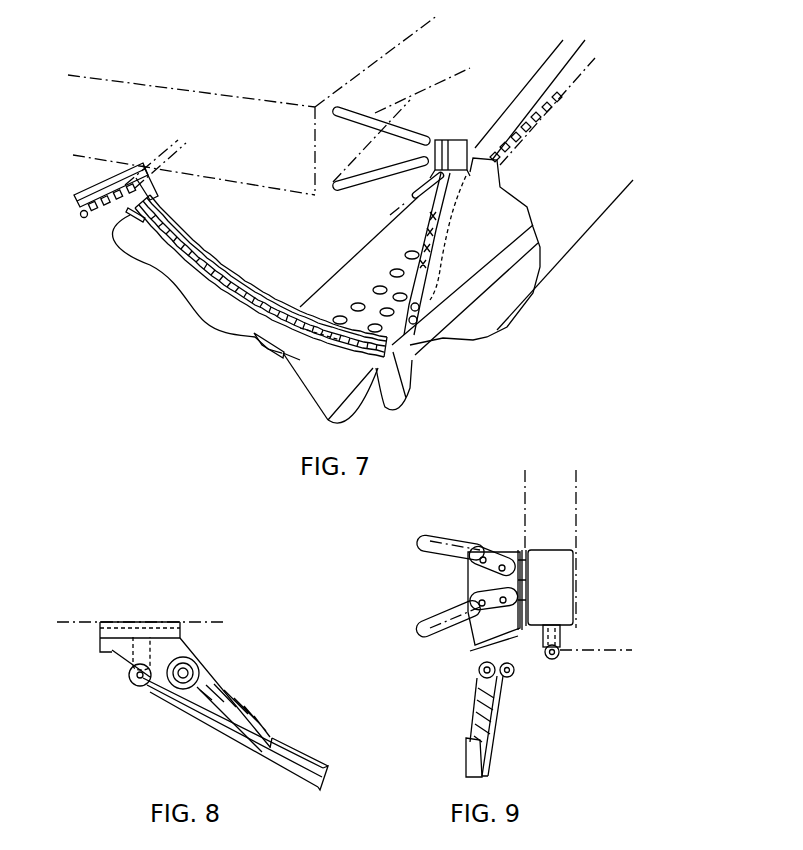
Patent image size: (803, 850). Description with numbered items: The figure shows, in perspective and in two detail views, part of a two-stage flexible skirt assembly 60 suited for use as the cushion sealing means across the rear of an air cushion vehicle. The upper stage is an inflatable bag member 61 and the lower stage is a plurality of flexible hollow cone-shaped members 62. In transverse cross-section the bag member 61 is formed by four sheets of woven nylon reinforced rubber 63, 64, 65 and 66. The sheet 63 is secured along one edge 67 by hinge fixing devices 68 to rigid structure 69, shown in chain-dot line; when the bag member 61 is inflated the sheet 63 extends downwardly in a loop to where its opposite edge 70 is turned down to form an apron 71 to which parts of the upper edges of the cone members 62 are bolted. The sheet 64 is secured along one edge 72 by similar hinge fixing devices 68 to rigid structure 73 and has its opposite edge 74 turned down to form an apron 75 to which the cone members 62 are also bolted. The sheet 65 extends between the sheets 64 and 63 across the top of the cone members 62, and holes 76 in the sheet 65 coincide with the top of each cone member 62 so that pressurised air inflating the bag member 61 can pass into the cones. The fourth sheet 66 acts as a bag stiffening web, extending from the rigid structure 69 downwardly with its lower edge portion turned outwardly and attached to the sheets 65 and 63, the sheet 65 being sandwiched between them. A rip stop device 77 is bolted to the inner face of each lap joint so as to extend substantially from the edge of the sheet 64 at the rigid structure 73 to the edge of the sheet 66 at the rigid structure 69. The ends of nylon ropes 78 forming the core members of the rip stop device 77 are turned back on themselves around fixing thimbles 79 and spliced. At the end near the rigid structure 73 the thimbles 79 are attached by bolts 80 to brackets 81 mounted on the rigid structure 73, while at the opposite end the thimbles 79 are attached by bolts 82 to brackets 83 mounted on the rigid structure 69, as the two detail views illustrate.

In FIG. 7, the two-stage flexible skirt assembly 60 is at (198, 327).
In FIG. 7, the inflatable bag member 61 is at (503, 334).
In FIG. 7, the flexible hollow cone-shaped members 62 is at (310, 399).
In FIG. 7, the sheet 63 is at (583, 185).
In FIG. 9, the sheet 63 is at (608, 648).
In FIG. 7, the sheet 64 is at (150, 264).
In FIG. 8, the sheet 64 is at (220, 731).
In FIG. 7, the sheet 65 is at (340, 280).
In FIG. 7, the fourth sheet 66 is at (503, 225).
In FIG. 9, the fourth sheet 66 is at (494, 720).
In FIG. 7, the edge 67 is at (567, 78).
In FIG. 7, the hinge fixing devices 68 is at (545, 115).
In FIG. 8, the hinge fixing devices 68 is at (136, 686).
In FIG. 9, the hinge fixing devices 68 is at (558, 655).
In FIG. 7, the rigid structure 69 is at (545, 57).
In FIG. 9, the rigid structure 69 is at (575, 589).
In FIG. 7, the edge 70 is at (390, 357).
In FIG. 7, the apron 71 is at (328, 421).
In FIG. 7, the edge 72 is at (147, 175).
In FIG. 7, the rigid structure 73 is at (96, 178).
In FIG. 8, the rigid structure 73 is at (150, 622).
In FIG. 7, the edge 74 is at (291, 358).
In FIG. 7, the apron 75 is at (262, 353).
In FIG. 7, the holes 76 is at (390, 270).
In FIG. 7, the rip stop device 77 is at (197, 287).
In FIG. 8, the rip stop device 77 is at (292, 740).
In FIG. 9, the rip stop device 77 is at (468, 755).
In FIG. 8, the nylon ropes 78 is at (240, 718).
In FIG. 9, the nylon ropes 78 is at (476, 718).
In FIG. 8, the fixing thimbles 79 is at (186, 661).
In FIG. 9, the fixing thimbles 79 is at (478, 679).
In FIG. 8, the bolts 80 is at (190, 673).
In FIG. 8, the brackets 81 is at (112, 650).
In FIG. 9, the bolts 82 is at (479, 670).
In FIG. 9, the brackets 83 is at (517, 650).